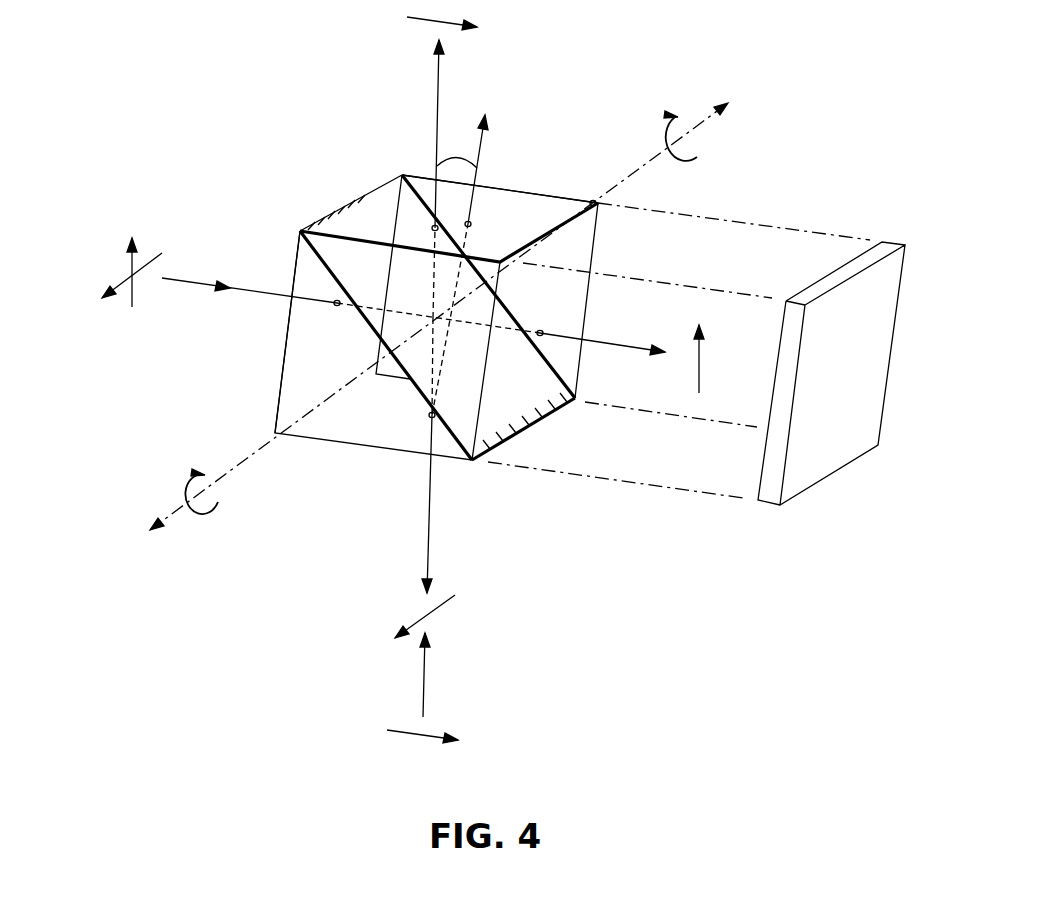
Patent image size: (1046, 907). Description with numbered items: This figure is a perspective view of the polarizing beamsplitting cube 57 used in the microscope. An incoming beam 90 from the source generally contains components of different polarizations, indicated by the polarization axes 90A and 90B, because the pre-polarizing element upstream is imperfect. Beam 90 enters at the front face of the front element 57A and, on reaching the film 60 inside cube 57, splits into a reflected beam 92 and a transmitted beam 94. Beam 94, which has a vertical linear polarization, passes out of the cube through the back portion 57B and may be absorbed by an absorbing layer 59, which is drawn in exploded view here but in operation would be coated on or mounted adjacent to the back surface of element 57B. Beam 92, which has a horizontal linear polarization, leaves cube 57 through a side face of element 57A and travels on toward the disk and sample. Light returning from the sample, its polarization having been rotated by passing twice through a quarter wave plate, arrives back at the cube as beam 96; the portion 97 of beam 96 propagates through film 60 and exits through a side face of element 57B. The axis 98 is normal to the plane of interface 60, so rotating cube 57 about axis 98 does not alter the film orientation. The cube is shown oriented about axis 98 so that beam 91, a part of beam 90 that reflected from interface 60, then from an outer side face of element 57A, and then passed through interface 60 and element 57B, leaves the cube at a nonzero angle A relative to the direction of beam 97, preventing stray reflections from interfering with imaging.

The polarizing beamsplitting cube 57 is at (296, 262).
The front element of cube 57A is at (278, 387).
The back portion of cube 57B is at (540, 197).
The absorbing layer 59 is at (903, 248).
The film 60 is at (365, 222).
The beam 90 is at (187, 283).
The polarization axis 90A is at (132, 255).
The polarization axis 90B is at (104, 289).
The reflected beam 91 is at (482, 143).
The reflected beam 92 is at (430, 525).
The transmitted beam 94 is at (610, 347).
The returning beam 96 is at (423, 685).
The portion of returning beam 97 is at (437, 83).
The axis 98 is at (703, 117).
The angle A is at (457, 157).